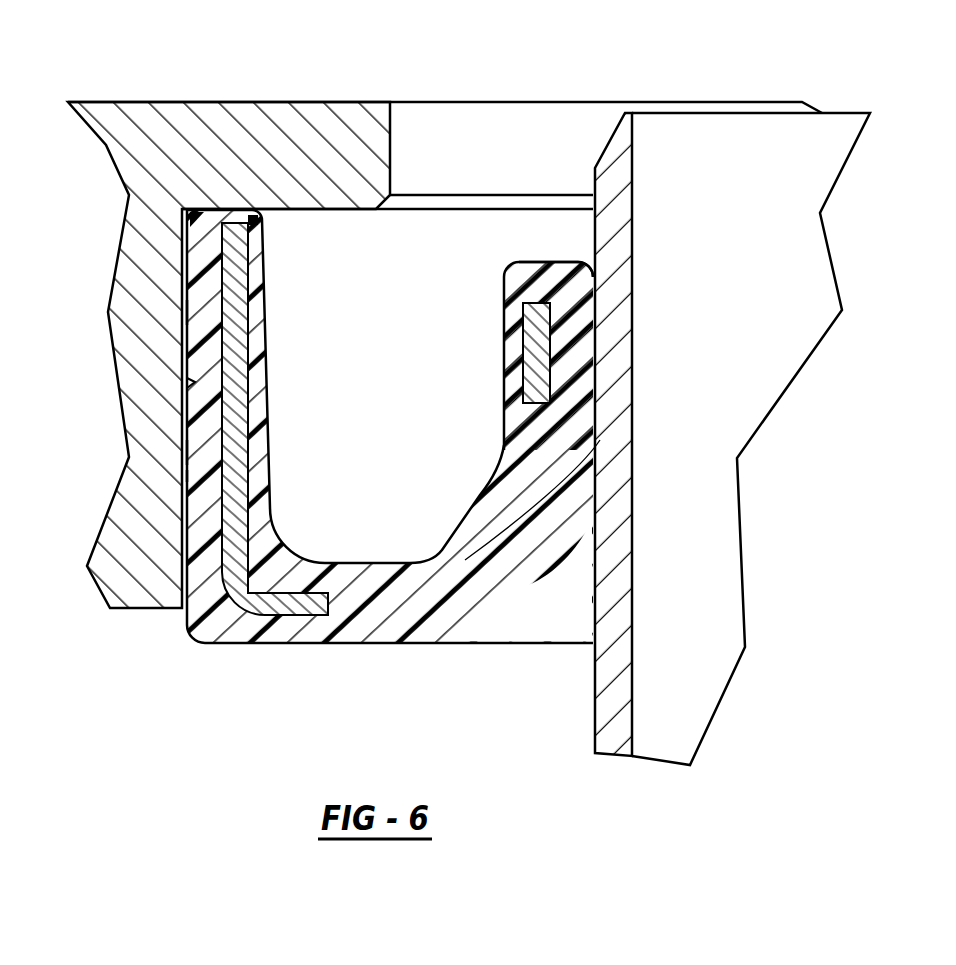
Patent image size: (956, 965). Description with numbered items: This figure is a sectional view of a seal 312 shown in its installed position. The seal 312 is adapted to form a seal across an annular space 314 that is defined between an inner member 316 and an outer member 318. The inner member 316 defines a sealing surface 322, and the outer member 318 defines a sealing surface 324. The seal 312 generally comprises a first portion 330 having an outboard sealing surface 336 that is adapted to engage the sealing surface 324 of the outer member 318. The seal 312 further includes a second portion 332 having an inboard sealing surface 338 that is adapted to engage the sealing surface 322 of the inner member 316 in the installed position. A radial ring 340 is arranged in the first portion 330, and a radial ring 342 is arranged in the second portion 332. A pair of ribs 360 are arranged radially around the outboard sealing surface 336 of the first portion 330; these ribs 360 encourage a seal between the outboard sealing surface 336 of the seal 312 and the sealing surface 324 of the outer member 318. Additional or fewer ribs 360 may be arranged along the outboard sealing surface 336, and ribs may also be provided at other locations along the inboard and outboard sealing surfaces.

The seal 312 is at (510, 353).
The annular space 314 is at (325, 272).
The inner member 316 is at (603, 557).
The outer member 318 is at (139, 539).
The sealing surface 322 is at (593, 520).
The sealing surface 324 is at (197, 382).
The first portion 330 is at (212, 252).
The second portion 332 is at (577, 297).
The outboard sealing surface 336 is at (185, 475).
The inboard sealing surface 338 is at (595, 338).
The radial ring 340 is at (240, 457).
The radial ring 342 is at (520, 400).
The ribs 360 is at (193, 312).